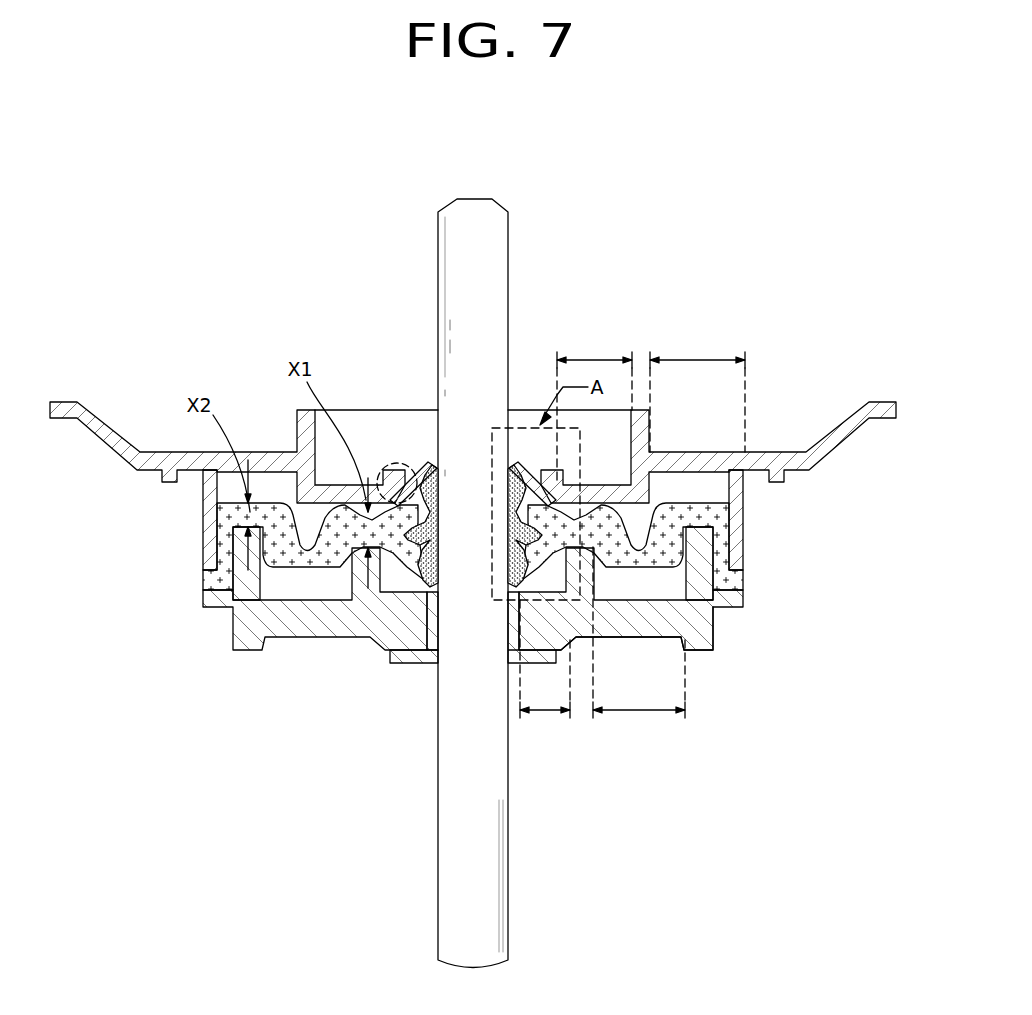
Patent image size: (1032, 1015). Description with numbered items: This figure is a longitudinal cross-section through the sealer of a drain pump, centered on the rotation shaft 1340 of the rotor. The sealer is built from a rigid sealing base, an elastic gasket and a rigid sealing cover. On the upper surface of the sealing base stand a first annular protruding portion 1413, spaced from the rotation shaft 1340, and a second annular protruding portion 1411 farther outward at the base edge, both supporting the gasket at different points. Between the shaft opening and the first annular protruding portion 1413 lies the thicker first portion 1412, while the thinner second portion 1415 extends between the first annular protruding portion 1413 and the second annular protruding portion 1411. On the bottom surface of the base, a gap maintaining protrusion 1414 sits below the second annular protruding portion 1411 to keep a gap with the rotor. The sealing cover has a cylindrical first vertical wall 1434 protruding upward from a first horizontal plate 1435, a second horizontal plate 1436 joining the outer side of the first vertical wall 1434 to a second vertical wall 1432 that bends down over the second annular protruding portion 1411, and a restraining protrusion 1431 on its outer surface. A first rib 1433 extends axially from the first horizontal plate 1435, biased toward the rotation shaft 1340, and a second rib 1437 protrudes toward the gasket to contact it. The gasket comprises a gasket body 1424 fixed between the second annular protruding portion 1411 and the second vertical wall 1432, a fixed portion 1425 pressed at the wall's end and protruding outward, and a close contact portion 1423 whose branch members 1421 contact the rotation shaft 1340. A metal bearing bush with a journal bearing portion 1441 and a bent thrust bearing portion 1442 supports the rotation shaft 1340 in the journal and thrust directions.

The rotation shaft 1340 is at (474, 212).
The second annular protruding portion 1411 is at (703, 542).
The first portion 1412 is at (545, 671).
The first annular protruding portion 1413 is at (587, 578).
The gap maintaining protrusion 1414 is at (700, 648).
The second portion 1415 is at (639, 645).
The branch members 1421 is at (510, 467).
The close contact portion 1423 is at (512, 465).
The gasket body 1424 is at (723, 557).
The fixed portion 1425 is at (740, 580).
The restraining protrusion 1431 is at (203, 522).
The second vertical wall 1432 is at (203, 542).
The first rib 1433 is at (397, 463).
The first vertical wall 1434 is at (296, 452).
The first horizontal plate 1435 is at (594, 405).
The second horizontal plate 1436 is at (697, 391).
The second rib 1437 is at (365, 510).
The journal bearing portion 1441 is at (432, 610).
The thrust bearing portion 1442 is at (410, 662).